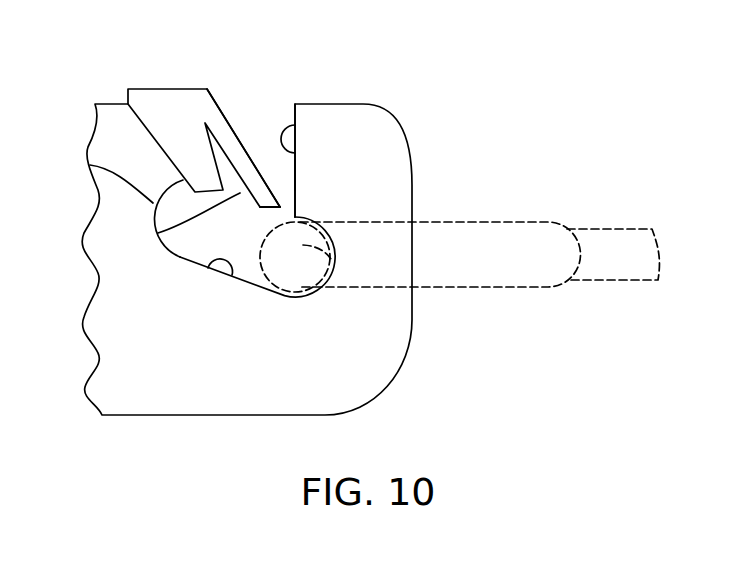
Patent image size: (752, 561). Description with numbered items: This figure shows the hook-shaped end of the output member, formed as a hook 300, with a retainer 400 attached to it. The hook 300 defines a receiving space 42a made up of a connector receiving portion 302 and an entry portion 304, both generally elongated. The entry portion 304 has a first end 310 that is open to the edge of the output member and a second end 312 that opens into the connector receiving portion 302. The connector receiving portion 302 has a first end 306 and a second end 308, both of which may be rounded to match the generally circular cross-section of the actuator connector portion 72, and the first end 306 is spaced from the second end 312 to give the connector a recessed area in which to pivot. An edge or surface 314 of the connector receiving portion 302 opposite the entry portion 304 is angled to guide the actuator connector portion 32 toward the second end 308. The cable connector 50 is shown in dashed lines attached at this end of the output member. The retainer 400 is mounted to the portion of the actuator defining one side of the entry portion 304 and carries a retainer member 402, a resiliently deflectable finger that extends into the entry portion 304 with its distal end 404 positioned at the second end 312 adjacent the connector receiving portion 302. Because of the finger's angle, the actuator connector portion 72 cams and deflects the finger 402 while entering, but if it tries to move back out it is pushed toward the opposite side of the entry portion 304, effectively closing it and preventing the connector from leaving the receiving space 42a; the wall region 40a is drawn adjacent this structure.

The hook 300 is at (377, 343).
The retainer 400 is at (143, 103).
The receiving space 42a is at (242, 102).
The first end of the entry portion 310 is at (252, 103).
The entry portion 304 is at (260, 143).
The housing wall 40a is at (297, 150).
The retainer member 402 is at (240, 160).
The distal end 404 is at (263, 201).
The second end of the connector receiving portion 308 is at (90, 165).
The second end of the entry portion 312 is at (158, 233).
The connector receiving portion 302 is at (193, 240).
The edge or surface 314 is at (230, 275).
The first end of the connector receiving portion 306 is at (310, 297).
The actuator connector portion 72 is at (334, 262).
The actuator connector portion 32 is at (514, 237).
The cable connector 50 is at (609, 263).